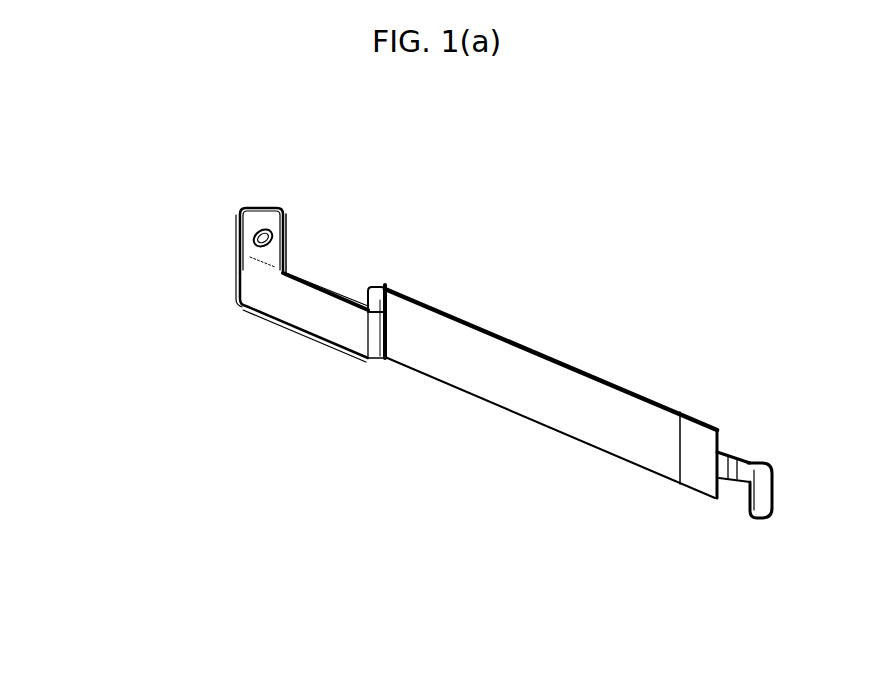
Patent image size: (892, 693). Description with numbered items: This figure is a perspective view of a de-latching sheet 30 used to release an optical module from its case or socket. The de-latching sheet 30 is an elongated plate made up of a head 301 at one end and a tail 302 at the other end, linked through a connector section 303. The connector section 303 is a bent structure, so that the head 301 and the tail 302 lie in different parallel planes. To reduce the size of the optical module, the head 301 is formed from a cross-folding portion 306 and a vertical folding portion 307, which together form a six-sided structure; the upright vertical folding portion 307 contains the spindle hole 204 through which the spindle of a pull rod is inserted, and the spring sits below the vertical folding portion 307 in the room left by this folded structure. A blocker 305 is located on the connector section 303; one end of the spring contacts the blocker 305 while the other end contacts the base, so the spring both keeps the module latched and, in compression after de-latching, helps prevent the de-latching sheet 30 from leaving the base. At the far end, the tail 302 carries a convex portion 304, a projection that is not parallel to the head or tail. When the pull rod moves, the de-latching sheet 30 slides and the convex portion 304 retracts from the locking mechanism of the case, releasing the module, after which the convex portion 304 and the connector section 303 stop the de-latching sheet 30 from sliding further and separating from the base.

The de-latching sheet 30 is at (545, 297).
The spindle hole 204 is at (250, 234).
The de-latching sheet head 301 is at (305, 316).
The de-latching sheet tail 302 is at (487, 363).
The connector section 303 is at (367, 362).
The convex portion 304 is at (740, 488).
The blocker 305 is at (388, 283).
The cross-folding portion 306 is at (340, 355).
The vertical folding portion 307 is at (265, 215).